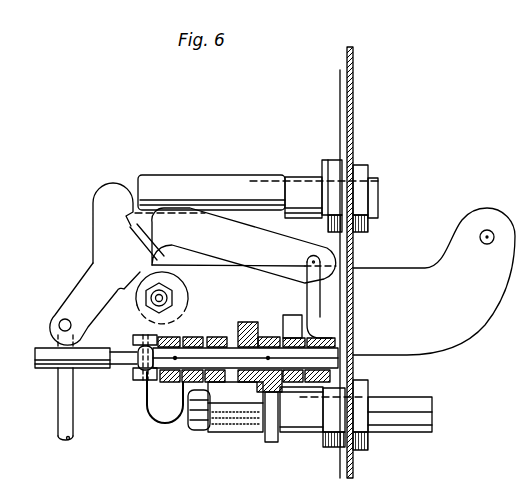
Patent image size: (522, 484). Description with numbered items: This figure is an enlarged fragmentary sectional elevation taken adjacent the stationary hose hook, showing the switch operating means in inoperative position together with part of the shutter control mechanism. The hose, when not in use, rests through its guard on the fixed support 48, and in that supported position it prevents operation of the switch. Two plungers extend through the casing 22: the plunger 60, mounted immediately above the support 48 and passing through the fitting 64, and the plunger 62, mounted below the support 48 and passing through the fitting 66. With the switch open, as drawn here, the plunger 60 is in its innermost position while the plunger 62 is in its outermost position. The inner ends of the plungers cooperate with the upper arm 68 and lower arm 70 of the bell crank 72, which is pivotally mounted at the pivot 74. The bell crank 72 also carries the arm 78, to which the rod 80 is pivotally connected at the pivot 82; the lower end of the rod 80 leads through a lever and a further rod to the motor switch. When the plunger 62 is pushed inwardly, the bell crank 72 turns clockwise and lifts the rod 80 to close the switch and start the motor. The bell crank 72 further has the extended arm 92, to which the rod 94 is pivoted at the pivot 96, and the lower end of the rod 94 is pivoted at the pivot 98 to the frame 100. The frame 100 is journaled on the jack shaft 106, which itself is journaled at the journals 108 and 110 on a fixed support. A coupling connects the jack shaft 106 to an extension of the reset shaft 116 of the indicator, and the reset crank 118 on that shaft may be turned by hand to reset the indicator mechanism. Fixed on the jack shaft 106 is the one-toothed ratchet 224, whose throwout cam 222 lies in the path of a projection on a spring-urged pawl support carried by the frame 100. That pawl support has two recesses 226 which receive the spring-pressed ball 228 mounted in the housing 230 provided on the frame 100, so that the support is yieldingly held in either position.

The casing 22 is at (358, 109).
The fixed support 48 is at (455, 333).
The plunger 60 is at (379, 185).
The plunger 62 is at (423, 412).
The fitting 64 is at (359, 181).
The fitting 66 is at (355, 445).
The upper arm 68 is at (107, 193).
The lower arm 70 is at (163, 415).
The bell crank 72 is at (103, 220).
The pivot 74 is at (150, 297).
The arm 78 is at (94, 302).
The rod 80 is at (60, 397).
The pivot 82 is at (59, 323).
The extended arm 92 is at (237, 232).
The rod 94 is at (330, 280).
The pivot 96 is at (317, 262).
The pivot 98 is at (346, 300).
The frame 100 is at (312, 330).
The jack shaft 106 is at (330, 360).
The journal 108 is at (337, 340).
The journal 110 is at (190, 334).
The reset shaft 116 is at (87, 368).
The reset crank 118 is at (280, 433).
The throwout cam 222 is at (267, 334).
The one-toothed ratchet 224 is at (243, 320).
The recesses 226 is at (270, 430).
The spring-pressed ball 228 is at (257, 433).
The housing 230 is at (218, 433).